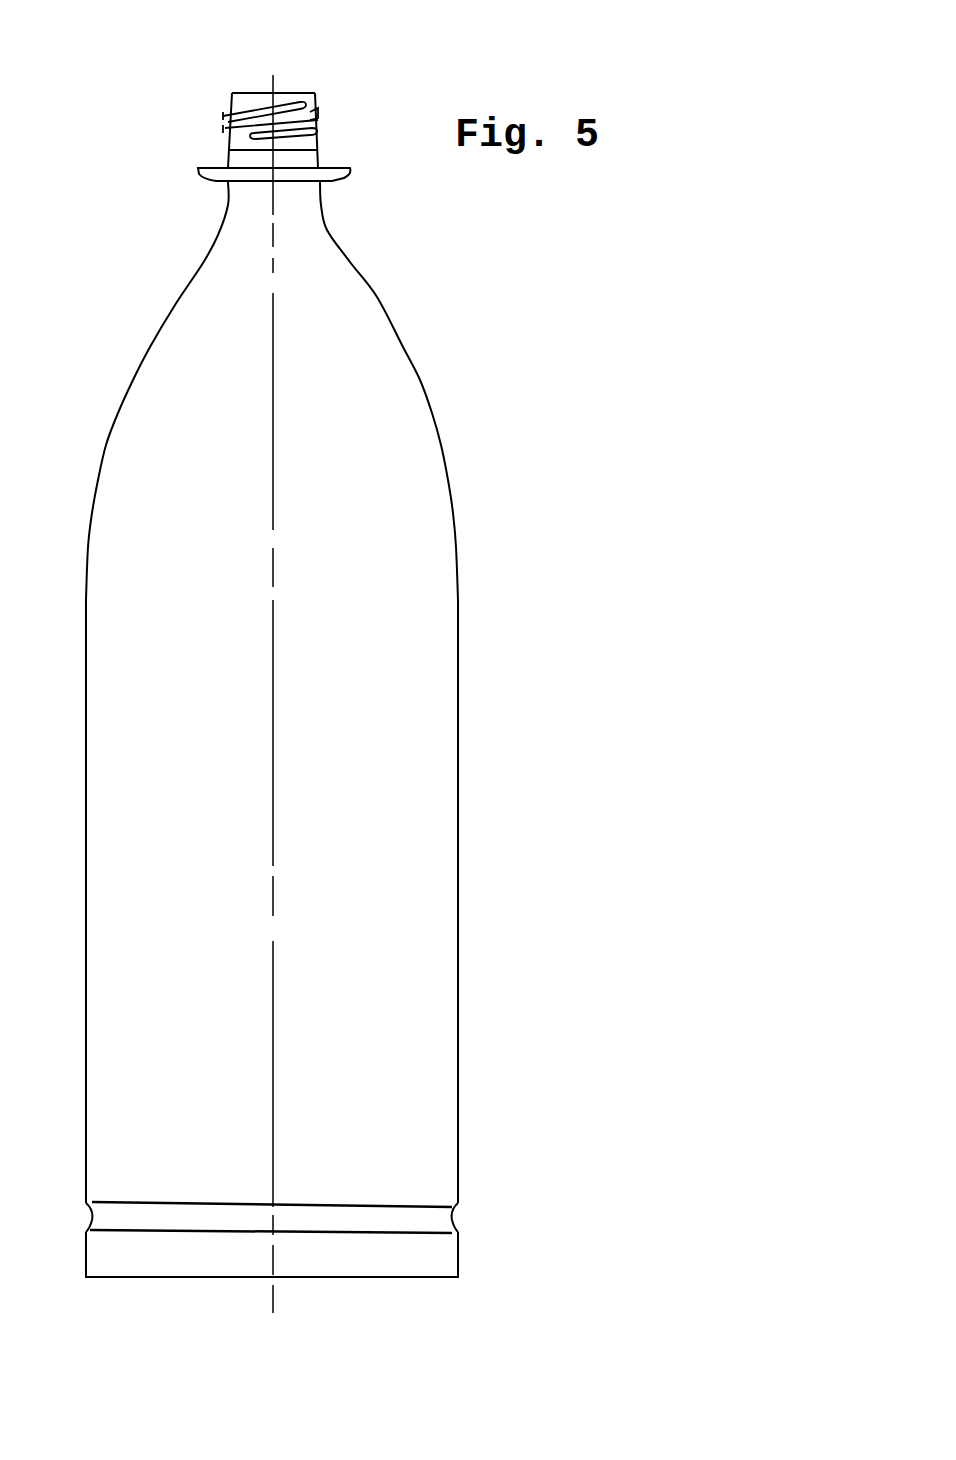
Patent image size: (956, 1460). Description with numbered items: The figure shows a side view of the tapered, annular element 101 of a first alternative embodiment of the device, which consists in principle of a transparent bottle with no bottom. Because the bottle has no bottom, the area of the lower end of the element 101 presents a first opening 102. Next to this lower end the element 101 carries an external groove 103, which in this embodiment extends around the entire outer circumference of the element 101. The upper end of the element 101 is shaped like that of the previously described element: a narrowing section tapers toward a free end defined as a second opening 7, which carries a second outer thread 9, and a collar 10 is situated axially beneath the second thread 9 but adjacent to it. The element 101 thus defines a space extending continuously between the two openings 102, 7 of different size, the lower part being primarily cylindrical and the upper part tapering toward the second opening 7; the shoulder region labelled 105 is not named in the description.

The second opening 7 is at (297, 86).
The second outer thread 9 is at (318, 113).
The collar 10 is at (332, 177).
The tapered, annular element 101 is at (462, 688).
The first opening 102 is at (329, 1284).
The external groove 103 is at (452, 1220).
The shoulder portion 105 is at (404, 347).